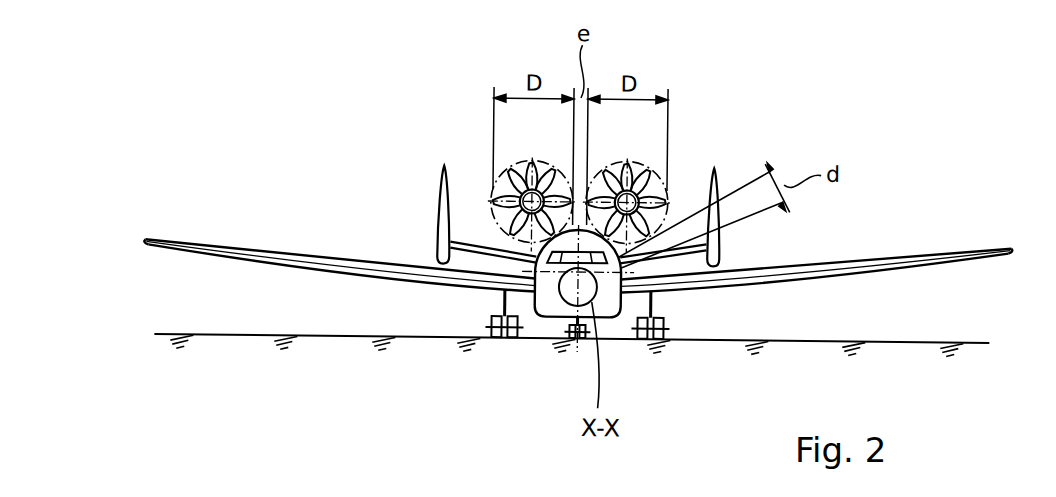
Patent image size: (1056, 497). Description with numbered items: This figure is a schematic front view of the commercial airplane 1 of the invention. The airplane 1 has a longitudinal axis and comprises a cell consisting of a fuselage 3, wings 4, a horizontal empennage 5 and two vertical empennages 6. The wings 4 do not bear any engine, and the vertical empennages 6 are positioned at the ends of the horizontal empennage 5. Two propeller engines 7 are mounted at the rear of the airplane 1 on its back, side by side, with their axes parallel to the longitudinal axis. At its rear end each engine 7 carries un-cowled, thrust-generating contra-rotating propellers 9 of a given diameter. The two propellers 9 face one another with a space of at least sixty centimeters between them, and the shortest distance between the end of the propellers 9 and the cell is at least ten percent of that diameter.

The commercial airplane 1 is at (356, 198).
The fuselage 3 is at (540, 300).
The wings 4 is at (276, 250).
The horizontal empennage 5 is at (467, 243).
The vertical empennages 6 is at (441, 190).
The propeller engines 7 is at (532, 214).
The propellers 9 is at (650, 180).